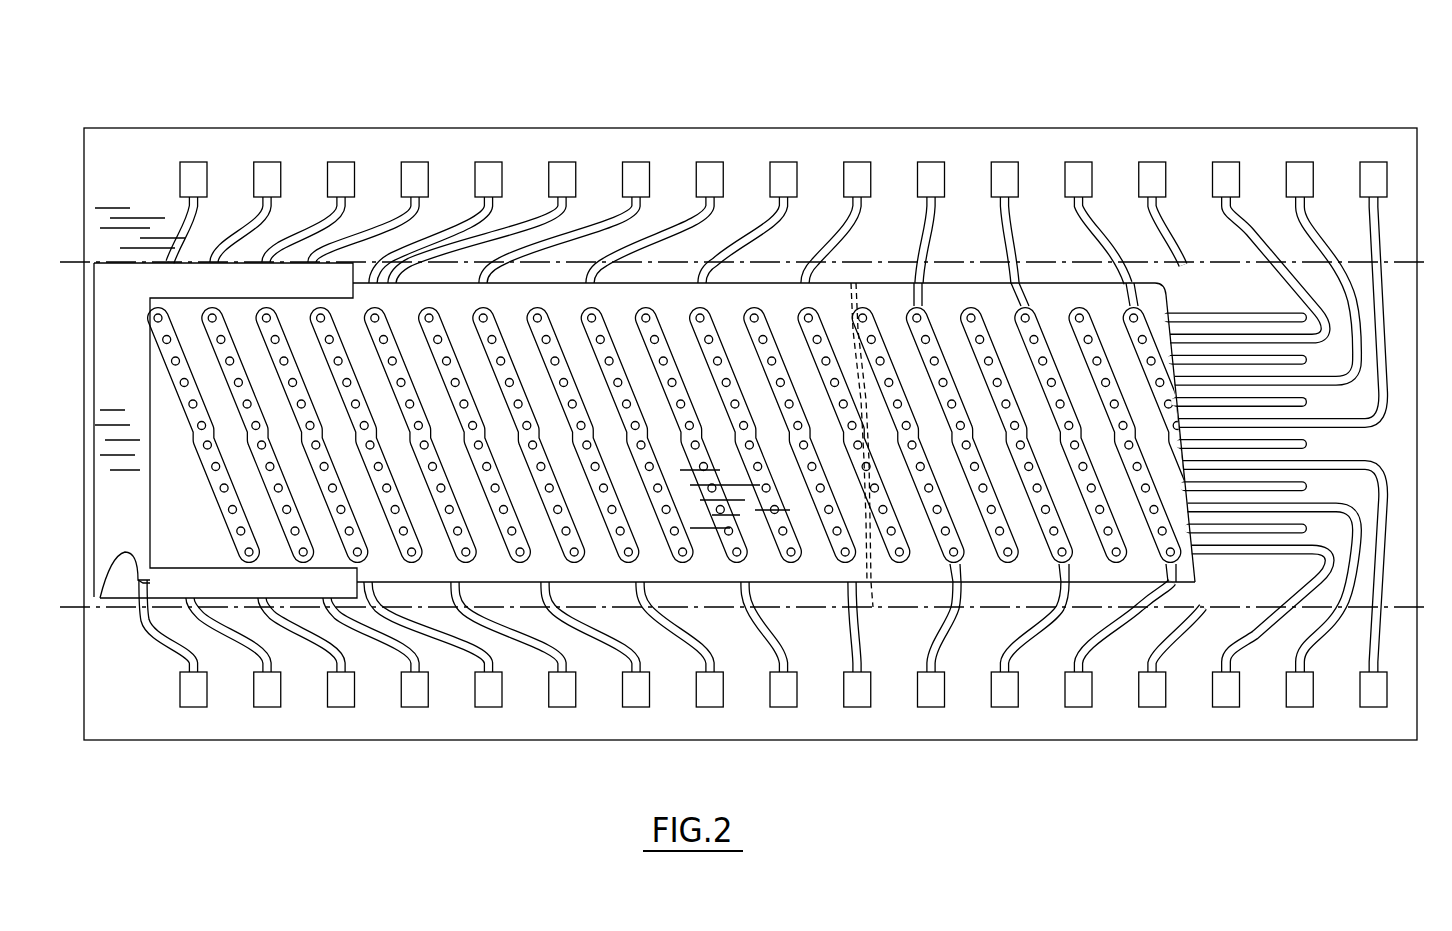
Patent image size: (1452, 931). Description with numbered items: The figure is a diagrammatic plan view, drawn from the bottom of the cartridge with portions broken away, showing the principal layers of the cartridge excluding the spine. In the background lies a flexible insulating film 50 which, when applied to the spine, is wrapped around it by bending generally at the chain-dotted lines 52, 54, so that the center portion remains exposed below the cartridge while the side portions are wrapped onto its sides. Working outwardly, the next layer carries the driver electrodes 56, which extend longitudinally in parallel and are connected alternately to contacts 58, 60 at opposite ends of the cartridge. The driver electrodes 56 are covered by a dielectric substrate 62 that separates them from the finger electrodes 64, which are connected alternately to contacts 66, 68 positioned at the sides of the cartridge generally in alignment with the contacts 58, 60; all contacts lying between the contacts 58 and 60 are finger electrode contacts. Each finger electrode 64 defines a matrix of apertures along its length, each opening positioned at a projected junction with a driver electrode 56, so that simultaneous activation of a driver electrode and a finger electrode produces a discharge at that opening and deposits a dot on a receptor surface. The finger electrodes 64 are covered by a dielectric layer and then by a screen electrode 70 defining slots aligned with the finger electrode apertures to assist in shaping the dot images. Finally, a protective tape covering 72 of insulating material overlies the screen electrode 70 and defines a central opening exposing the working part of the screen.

The flexible insulating film 50 is at (1170, 150).
The chain-dotted line 52 is at (70, 255).
The chain-dotted line 54 is at (104, 606).
The driver electrodes 56 is at (1257, 530).
The contacts 58 is at (1226, 162).
The contacts 60 is at (253, 162).
The dielectric substrate 62 is at (1172, 297).
The finger electrodes 64 is at (562, 162).
The contacts 66 is at (925, 162).
The contacts 68 is at (490, 707).
The screen electrode 70 is at (560, 300).
The protective tape covering 72 is at (140, 485).